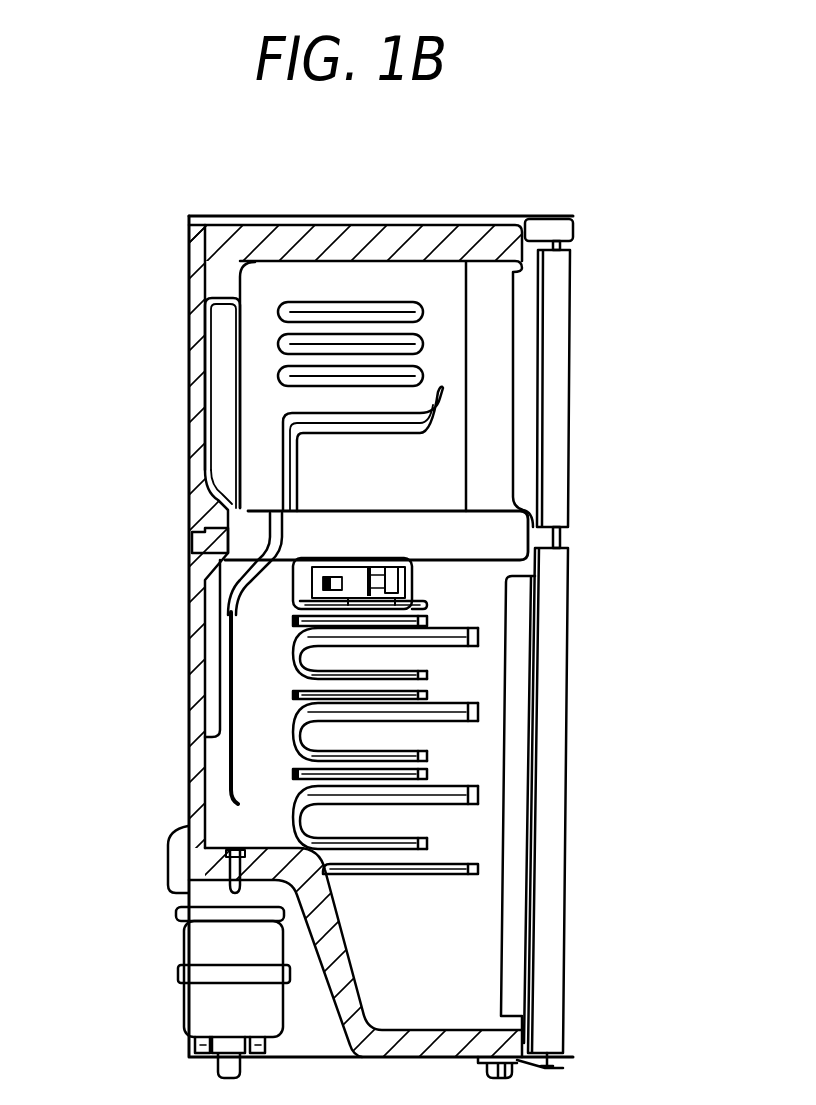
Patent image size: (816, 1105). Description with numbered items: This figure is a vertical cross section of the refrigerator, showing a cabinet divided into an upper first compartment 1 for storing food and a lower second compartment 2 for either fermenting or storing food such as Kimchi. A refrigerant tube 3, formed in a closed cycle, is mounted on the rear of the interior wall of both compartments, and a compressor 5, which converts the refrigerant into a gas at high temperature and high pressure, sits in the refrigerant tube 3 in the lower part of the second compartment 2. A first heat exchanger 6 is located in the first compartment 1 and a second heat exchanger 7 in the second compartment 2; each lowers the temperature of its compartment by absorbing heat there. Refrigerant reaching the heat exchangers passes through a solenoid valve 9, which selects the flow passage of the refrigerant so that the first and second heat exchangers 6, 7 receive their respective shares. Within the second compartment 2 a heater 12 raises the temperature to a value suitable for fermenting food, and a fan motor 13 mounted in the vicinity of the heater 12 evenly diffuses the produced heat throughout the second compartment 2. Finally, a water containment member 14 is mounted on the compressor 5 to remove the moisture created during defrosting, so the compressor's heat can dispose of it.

The first compartment 1 is at (437, 465).
The second compartment 2 is at (447, 745).
The refrigerant tube 3 is at (205, 415).
The compressor 5 is at (195, 1010).
The first heat exchanger 6 is at (403, 302).
The second heat exchanger 7 is at (218, 767).
The solenoid valve 9 is at (217, 542).
The heater 12 is at (318, 580).
The fan motor 13 is at (412, 580).
The water containment member 14 is at (205, 890).